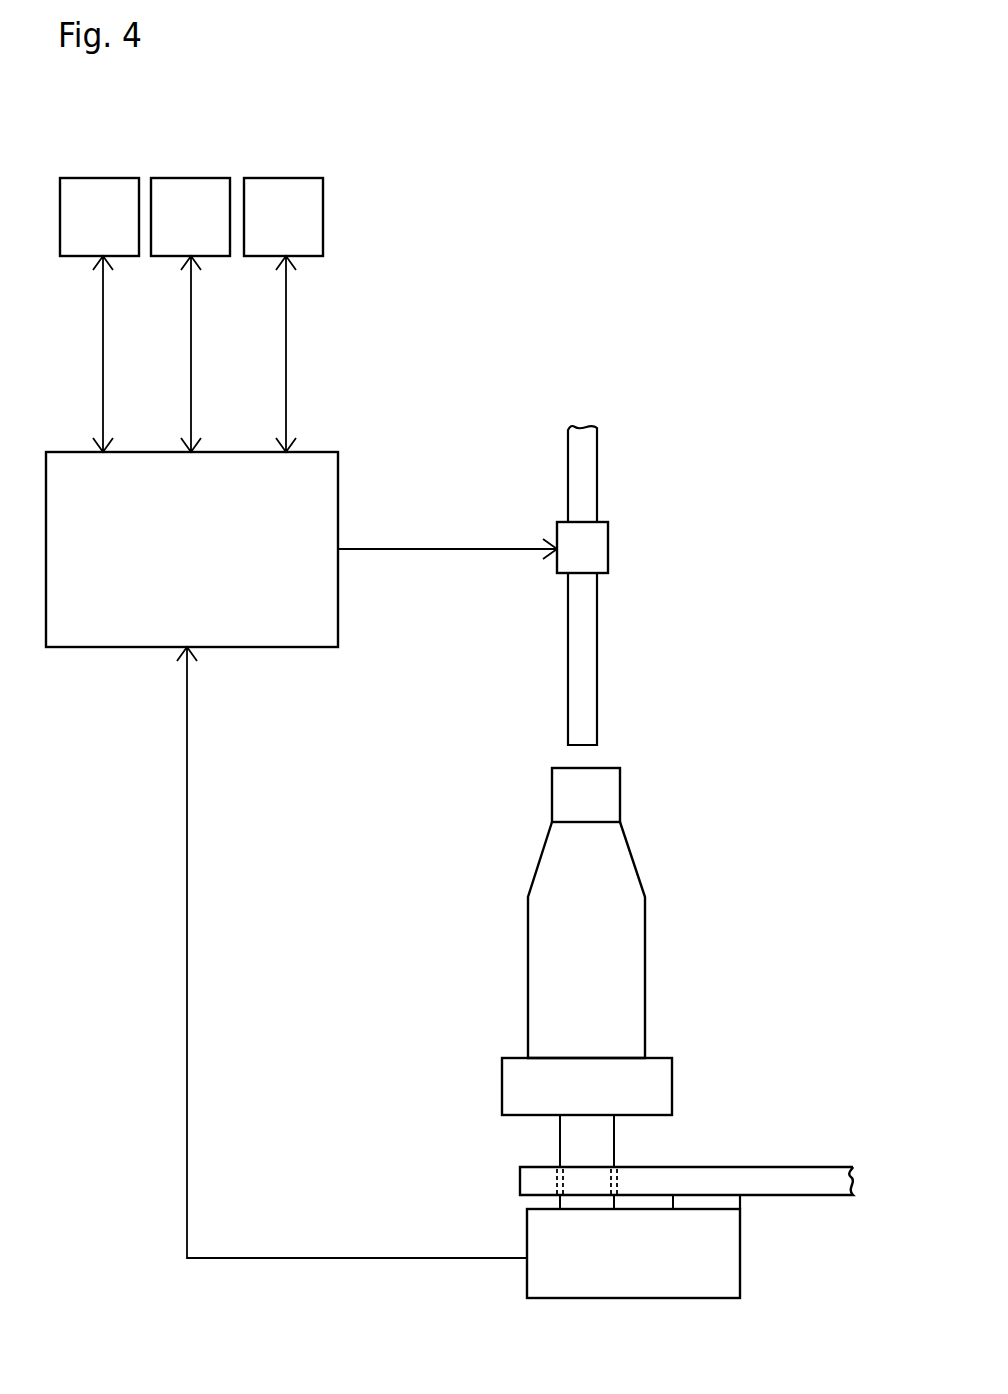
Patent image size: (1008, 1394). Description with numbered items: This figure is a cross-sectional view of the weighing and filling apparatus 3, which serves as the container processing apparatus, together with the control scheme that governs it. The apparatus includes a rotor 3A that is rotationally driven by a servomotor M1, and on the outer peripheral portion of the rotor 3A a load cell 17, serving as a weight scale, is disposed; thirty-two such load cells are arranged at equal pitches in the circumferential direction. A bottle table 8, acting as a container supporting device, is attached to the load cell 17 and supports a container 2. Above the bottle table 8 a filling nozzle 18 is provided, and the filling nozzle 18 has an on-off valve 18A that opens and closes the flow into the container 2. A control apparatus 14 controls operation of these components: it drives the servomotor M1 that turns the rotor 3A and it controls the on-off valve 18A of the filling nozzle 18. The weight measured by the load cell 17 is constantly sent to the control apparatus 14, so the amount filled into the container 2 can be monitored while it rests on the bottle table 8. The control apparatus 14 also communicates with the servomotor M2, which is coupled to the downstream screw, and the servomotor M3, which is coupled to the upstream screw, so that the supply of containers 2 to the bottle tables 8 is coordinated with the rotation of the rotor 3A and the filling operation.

The servomotor M1 is at (95, 197).
The servomotor M2 is at (188, 192).
The servomotor M3 is at (278, 200).
The control apparatus 14 is at (315, 495).
The filling nozzle 18 is at (588, 652).
The on-off valve 18A is at (598, 553).
The container 2 is at (625, 893).
The weighing and filling apparatus 3 is at (748, 958).
The bottle table 8 is at (660, 1080).
The rotor 3A is at (772, 1178).
The load cell 17 is at (723, 1263).